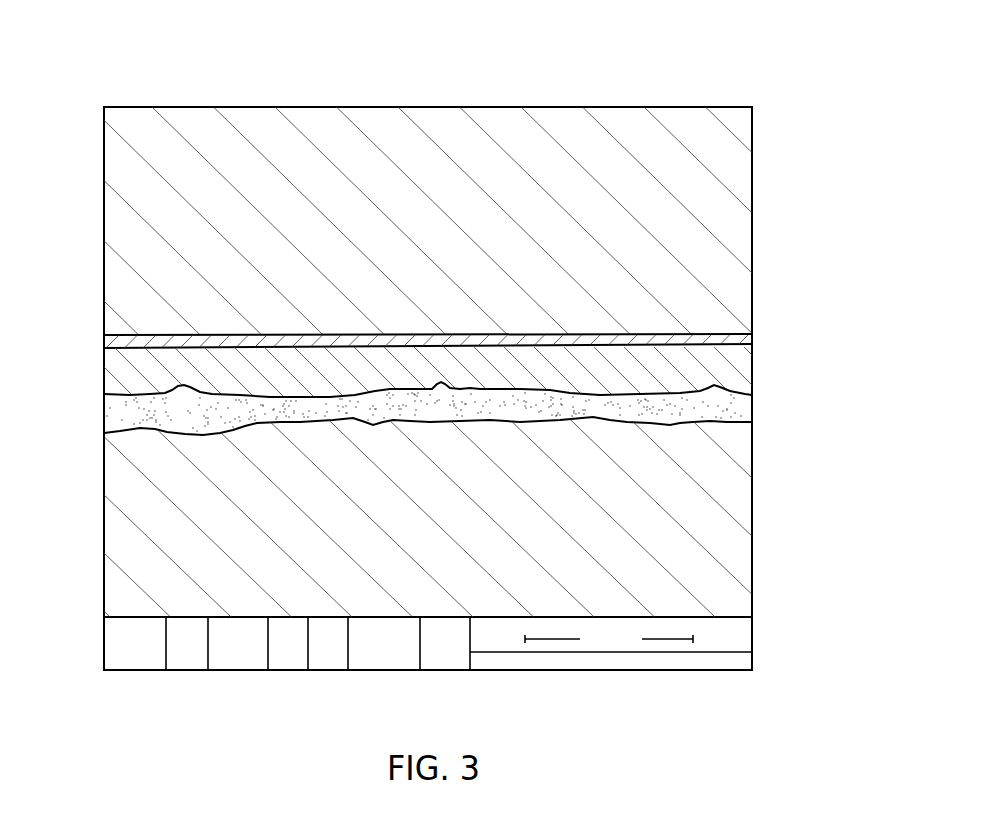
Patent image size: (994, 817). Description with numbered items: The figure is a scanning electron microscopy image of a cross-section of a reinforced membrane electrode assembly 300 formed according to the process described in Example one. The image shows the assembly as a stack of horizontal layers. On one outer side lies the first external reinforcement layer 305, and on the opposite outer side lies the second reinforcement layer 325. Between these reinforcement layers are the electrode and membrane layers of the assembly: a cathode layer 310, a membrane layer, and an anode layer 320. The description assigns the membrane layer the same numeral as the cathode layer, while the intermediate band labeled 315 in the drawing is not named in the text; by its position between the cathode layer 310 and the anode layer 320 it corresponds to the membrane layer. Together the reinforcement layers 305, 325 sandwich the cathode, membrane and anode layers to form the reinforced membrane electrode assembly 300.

The reinforced membrane electrode assembly 300 is at (428, 335).
The first external reinforcement layer 305 is at (733, 513).
The cathode layer 310 is at (128, 408).
The second layer 315 is at (121, 370).
The anode layer 320 is at (111, 340).
The second reinforcement layer 325 is at (733, 202).